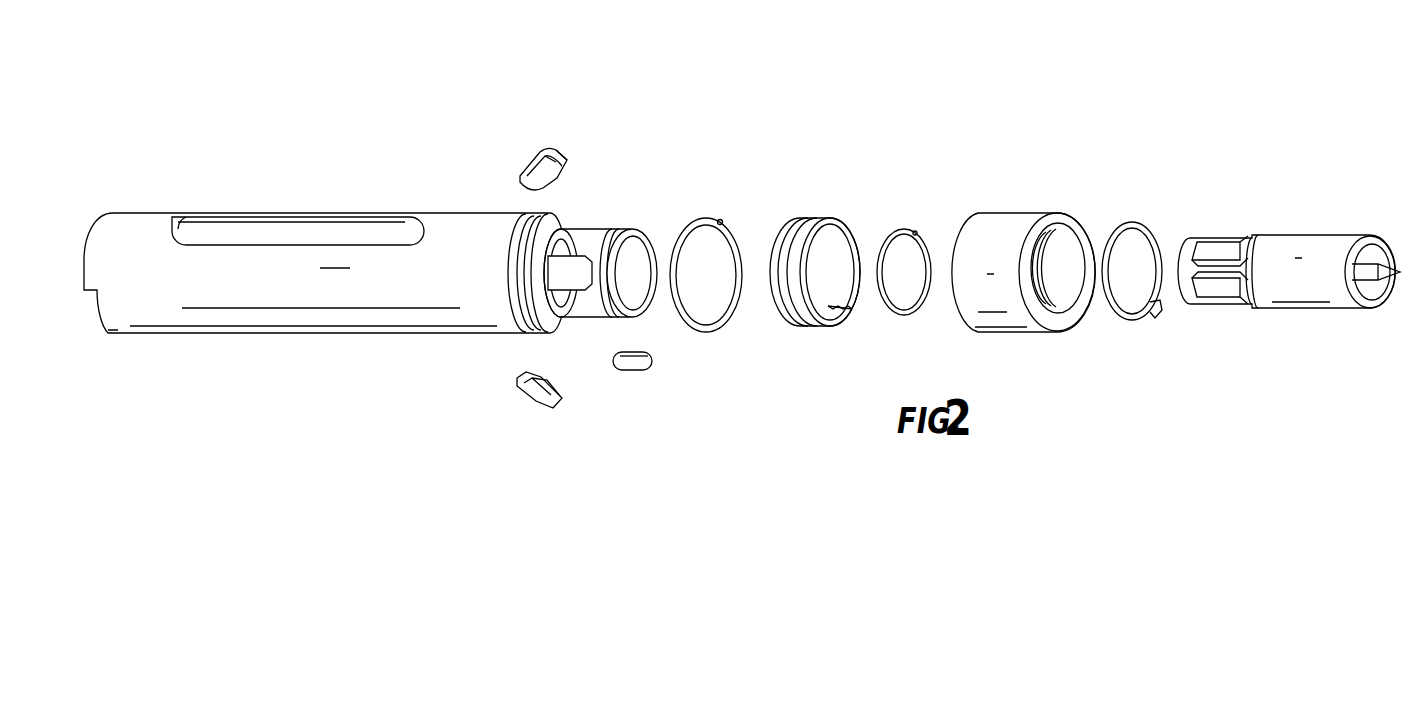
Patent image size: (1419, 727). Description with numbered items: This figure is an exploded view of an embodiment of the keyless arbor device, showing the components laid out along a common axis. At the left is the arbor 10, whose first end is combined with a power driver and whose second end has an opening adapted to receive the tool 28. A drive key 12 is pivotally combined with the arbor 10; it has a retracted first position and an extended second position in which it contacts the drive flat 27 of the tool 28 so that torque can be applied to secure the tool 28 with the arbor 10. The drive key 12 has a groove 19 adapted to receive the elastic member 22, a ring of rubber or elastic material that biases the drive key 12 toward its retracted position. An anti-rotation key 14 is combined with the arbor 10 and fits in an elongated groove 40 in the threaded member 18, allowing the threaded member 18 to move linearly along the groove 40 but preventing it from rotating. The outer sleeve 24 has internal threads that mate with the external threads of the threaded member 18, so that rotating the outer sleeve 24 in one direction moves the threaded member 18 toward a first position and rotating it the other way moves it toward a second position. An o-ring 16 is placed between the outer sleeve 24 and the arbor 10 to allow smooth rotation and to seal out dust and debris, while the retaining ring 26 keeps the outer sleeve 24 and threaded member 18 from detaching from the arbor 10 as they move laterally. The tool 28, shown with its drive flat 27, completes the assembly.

The arbor 10 is at (268, 294).
The drive key 12 is at (548, 150).
The anti-rotation key 14 is at (638, 371).
The o-ring 16 is at (705, 220).
The threaded member 18 is at (806, 220).
The groove 19 is at (556, 159).
The elastic member 22 is at (910, 316).
The outer sleeve 24 is at (1015, 225).
The retaining ring 26 is at (1130, 225).
The drive flat 27 is at (1213, 250).
The tool 28 is at (1288, 263).
The elongated groove 40 is at (850, 310).